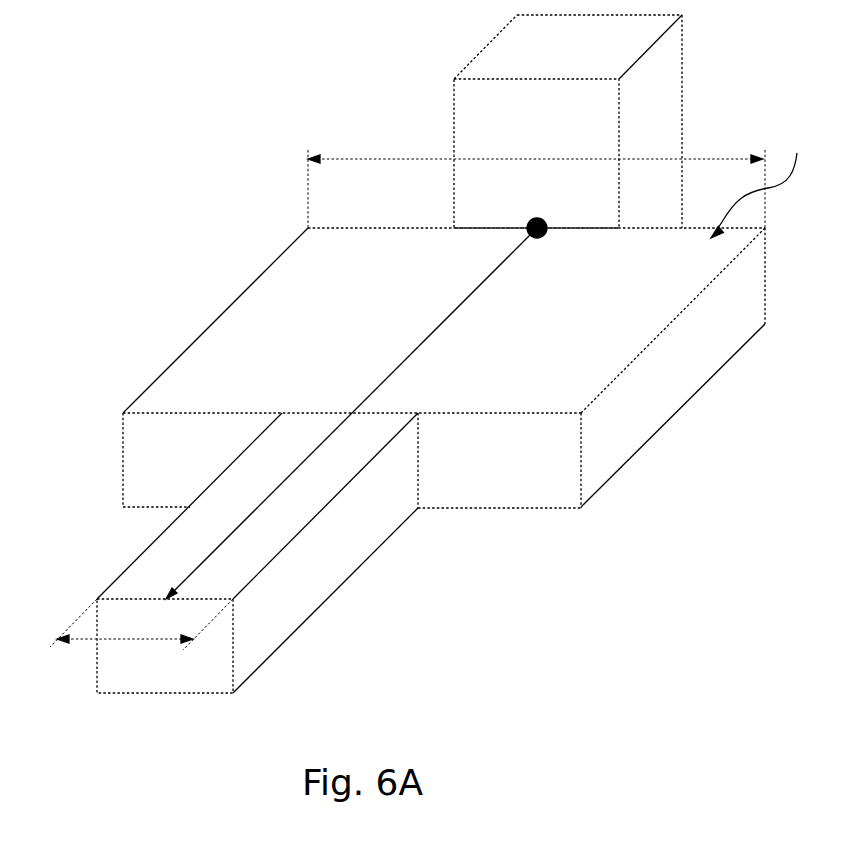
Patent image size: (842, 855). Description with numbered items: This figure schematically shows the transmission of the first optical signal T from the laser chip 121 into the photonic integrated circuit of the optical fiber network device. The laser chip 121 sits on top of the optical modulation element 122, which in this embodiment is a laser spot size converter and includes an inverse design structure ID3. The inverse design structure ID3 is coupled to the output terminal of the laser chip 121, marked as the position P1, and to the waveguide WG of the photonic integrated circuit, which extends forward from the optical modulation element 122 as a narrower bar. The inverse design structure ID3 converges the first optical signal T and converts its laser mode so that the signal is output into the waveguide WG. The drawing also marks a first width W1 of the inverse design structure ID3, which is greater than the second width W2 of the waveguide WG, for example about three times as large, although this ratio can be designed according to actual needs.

The laser chip 121 is at (498, 38).
The optical modulation element 122 is at (233, 307).
The waveguide WG is at (153, 552).
The inverse design structure ID3 is at (764, 180).
The first width W1 is at (536, 172).
The second width W2 is at (141, 639).
The position P1 is at (539, 209).
The first optical signal T is at (298, 468).